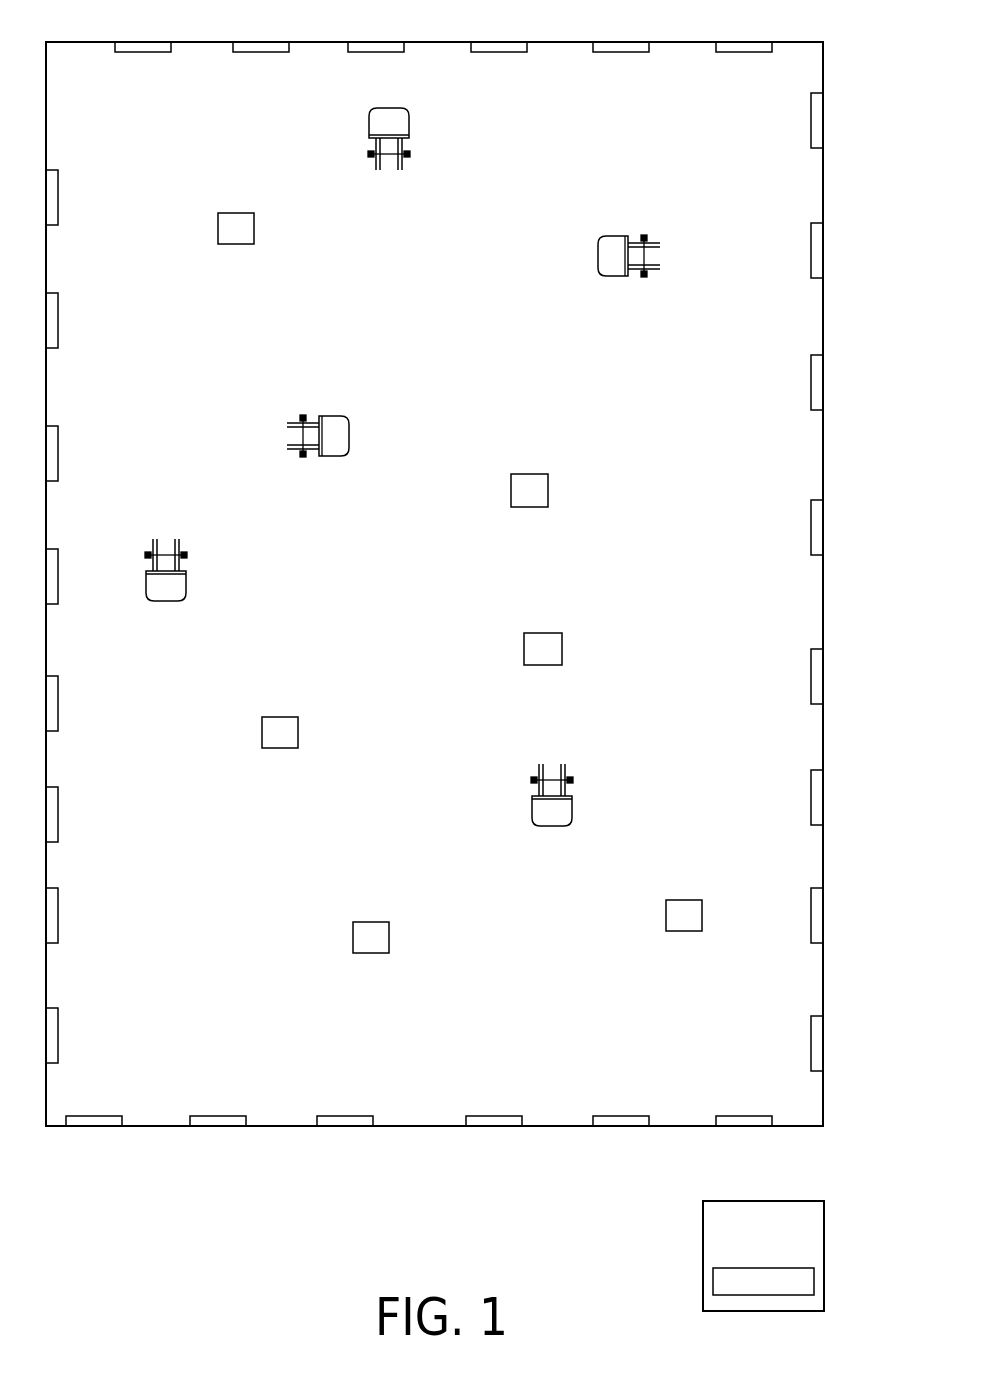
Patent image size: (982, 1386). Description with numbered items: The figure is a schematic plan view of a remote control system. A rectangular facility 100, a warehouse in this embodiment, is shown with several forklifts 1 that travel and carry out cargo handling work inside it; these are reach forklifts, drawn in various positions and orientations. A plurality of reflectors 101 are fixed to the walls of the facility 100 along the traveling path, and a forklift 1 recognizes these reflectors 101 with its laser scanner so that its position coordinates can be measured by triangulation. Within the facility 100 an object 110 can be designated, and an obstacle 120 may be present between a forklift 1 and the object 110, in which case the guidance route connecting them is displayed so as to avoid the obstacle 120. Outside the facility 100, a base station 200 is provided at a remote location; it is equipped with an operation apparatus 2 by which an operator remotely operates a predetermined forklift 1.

The facility 100 is at (436, 40).
The reflectors 101 is at (54, 170).
The forklift 1 is at (403, 126).
The object 110 is at (511, 490).
The obstacle 120 is at (530, 650).
The base station 200 is at (703, 1222).
The operation apparatus 2 is at (722, 1283).